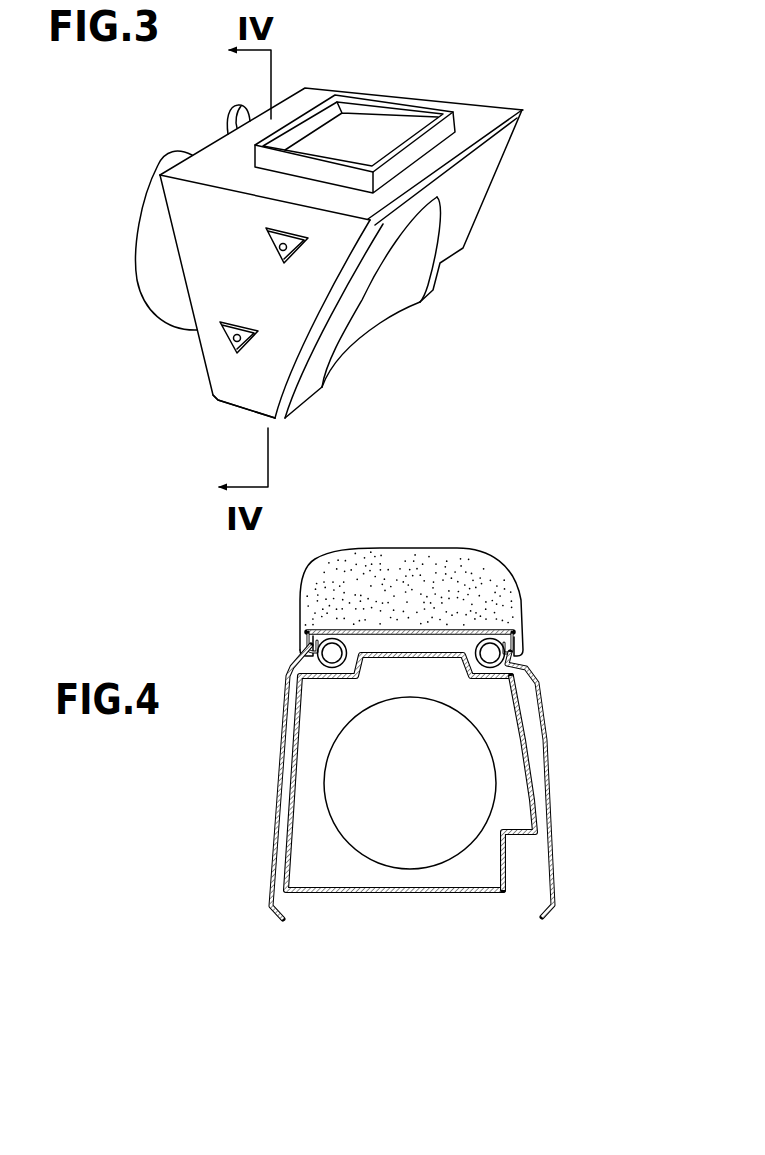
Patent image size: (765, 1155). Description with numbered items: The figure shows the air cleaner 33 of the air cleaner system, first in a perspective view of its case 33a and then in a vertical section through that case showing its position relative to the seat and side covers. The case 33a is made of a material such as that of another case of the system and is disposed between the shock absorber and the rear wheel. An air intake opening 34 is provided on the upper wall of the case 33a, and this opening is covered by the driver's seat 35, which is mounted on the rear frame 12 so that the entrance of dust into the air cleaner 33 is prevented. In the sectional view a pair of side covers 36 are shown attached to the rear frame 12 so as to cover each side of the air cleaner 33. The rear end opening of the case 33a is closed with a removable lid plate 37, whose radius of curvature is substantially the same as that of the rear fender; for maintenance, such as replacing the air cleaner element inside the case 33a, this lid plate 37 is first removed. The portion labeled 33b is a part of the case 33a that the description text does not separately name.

In FIG. 4, the rear frame 12 is at (305, 645).
In FIG. 3, the air cleaner 33 is at (318, 93).
In FIG. 4, the air cleaner 33 is at (340, 893).
In FIG. 3, the case 33a is at (255, 400).
In FIG. 4, the case 33a is at (530, 710).
In FIG. 3, the housing bulge 33b is at (151, 201).
In FIG. 3, the air intake opening 34 is at (381, 128).
In FIG. 4, the air intake opening 34 is at (442, 657).
In FIG. 4, the driver's seat 35 is at (413, 555).
In FIG. 4, the side covers 36 is at (272, 792).
In FIG. 3, the lid plate 37 is at (470, 207).